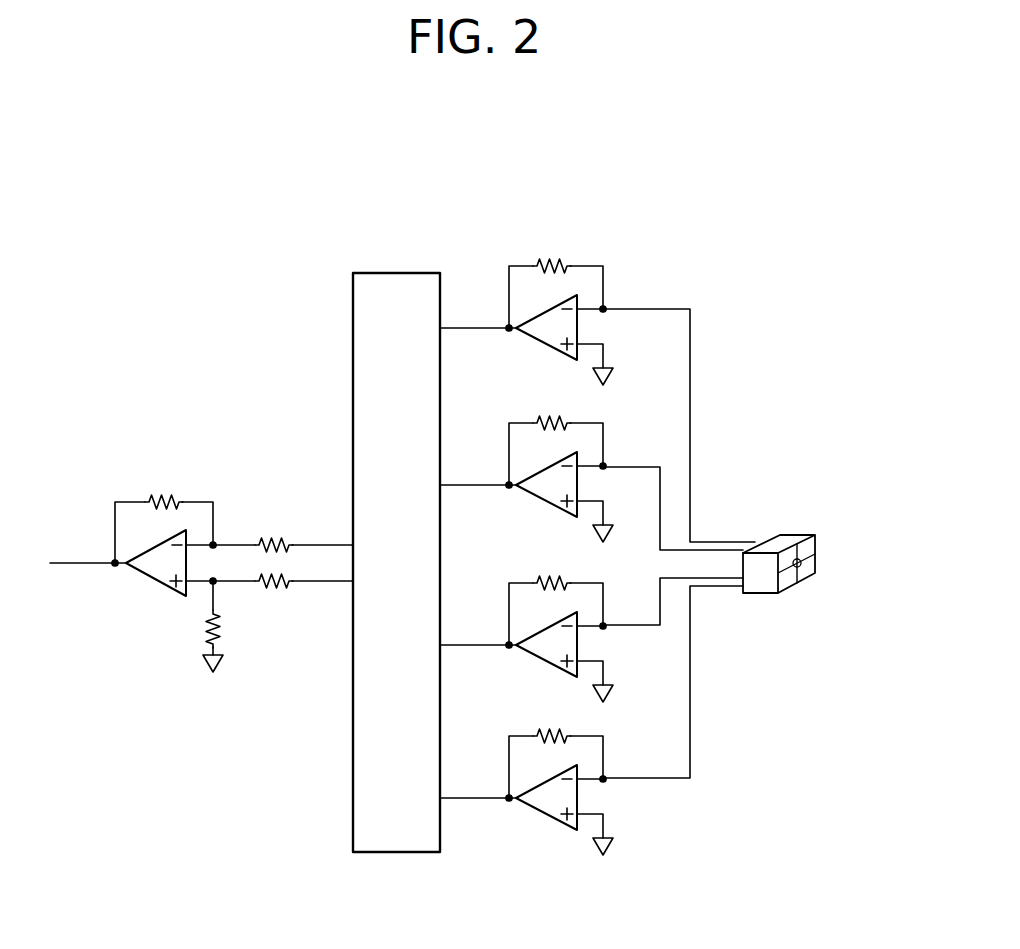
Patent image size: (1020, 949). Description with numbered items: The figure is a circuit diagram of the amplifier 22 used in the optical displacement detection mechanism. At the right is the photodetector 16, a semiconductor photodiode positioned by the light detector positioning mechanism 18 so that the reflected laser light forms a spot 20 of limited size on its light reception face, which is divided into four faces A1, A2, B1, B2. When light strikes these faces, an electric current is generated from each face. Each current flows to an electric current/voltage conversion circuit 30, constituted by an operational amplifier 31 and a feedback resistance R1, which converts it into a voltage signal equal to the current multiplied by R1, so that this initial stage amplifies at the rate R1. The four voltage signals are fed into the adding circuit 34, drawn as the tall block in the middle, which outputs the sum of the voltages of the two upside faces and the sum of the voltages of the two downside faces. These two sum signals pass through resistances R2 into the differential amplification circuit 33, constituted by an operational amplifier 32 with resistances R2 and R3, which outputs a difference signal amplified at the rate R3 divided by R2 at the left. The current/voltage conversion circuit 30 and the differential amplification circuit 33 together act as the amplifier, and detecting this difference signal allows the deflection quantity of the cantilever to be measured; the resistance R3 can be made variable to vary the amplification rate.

The photodetector 16 is at (815, 550).
The light detector positioning mechanism 18 is at (795, 534).
The spot 20 is at (815, 567).
The amplifier 22 is at (752, 480).
The electric current/voltage conversion circuit 30 is at (545, 492).
The operational amplifier 31 is at (534, 343).
The operational amplifier 32 is at (148, 577).
The differential amplification circuit 33 is at (188, 515).
The adding circuit 34 is at (393, 852).
The light reception face A1 is at (813, 548).
The light reception face A2 is at (786, 556).
The light reception face B1 is at (803, 580).
The light reception face B2 is at (787, 583).
The resistance R1 is at (580, 211).
The resistance R2 is at (269, 567).
The resistance R3 is at (169, 569).